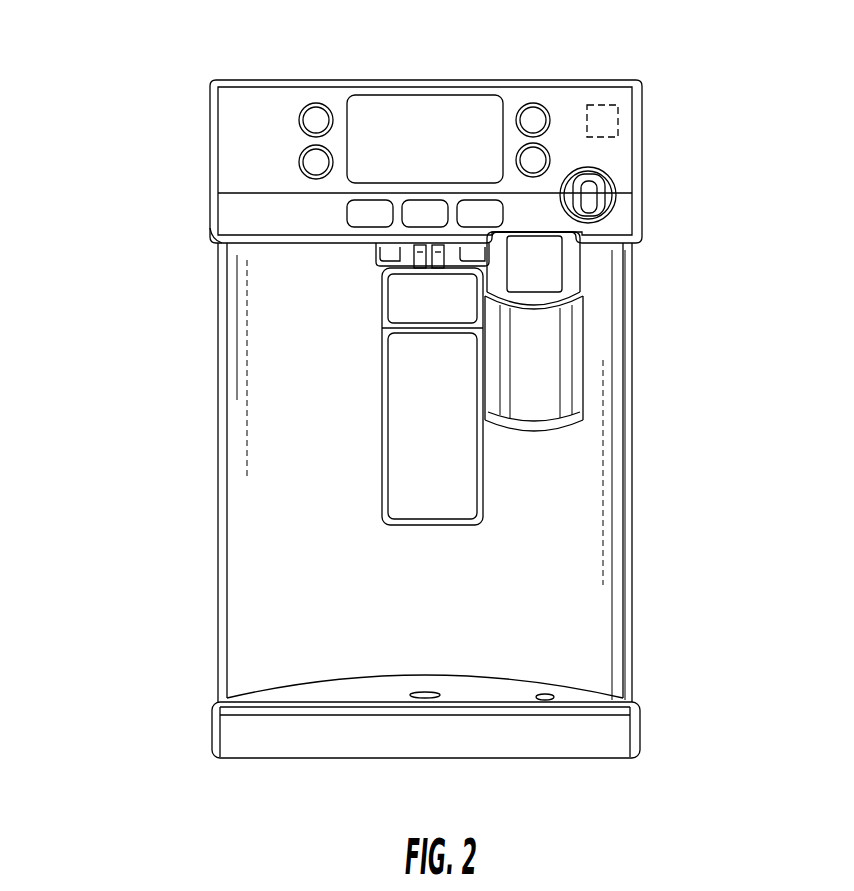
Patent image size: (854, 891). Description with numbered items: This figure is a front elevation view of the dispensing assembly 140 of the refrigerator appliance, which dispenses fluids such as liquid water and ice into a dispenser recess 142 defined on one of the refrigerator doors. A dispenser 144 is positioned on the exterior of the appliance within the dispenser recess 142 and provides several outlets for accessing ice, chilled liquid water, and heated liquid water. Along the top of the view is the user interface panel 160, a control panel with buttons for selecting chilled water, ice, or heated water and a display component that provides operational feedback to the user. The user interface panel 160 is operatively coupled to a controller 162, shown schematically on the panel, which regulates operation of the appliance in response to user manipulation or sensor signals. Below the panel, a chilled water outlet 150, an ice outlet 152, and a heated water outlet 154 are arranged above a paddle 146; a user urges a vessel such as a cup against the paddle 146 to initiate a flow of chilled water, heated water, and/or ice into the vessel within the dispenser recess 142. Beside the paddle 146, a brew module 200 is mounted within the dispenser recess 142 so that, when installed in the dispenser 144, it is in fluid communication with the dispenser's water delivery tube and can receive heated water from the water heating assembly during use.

The dispensing assembly 140 is at (106, 88).
The dispenser recess 142 is at (645, 582).
The dispenser 144 is at (632, 447).
The paddle 146 is at (410, 395).
The chilled water outlet 150 is at (422, 278).
The ice outlet 152 is at (390, 258).
The heated water outlet 154 is at (437, 278).
The user interface panel 160 is at (294, 116).
The controller 162 is at (620, 125).
The brew module 200 is at (580, 333).